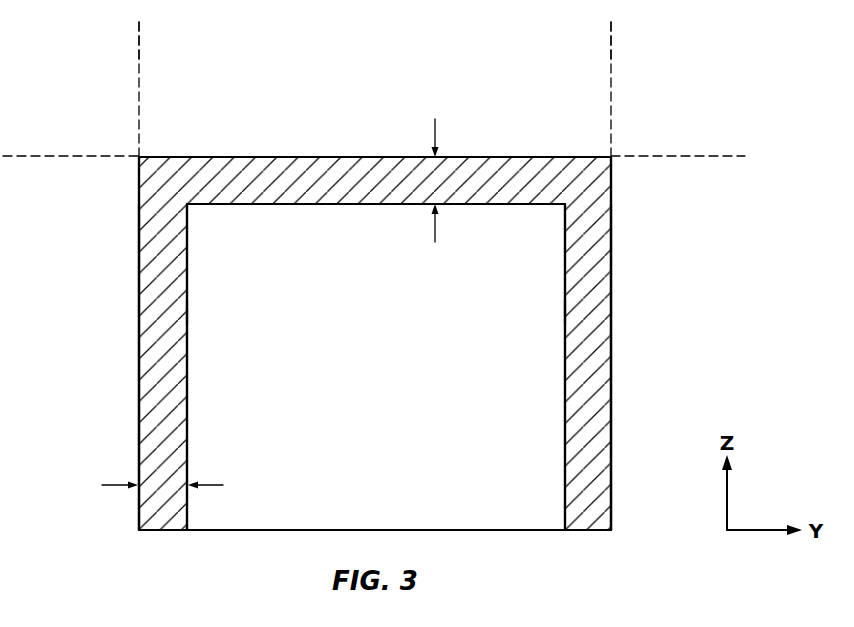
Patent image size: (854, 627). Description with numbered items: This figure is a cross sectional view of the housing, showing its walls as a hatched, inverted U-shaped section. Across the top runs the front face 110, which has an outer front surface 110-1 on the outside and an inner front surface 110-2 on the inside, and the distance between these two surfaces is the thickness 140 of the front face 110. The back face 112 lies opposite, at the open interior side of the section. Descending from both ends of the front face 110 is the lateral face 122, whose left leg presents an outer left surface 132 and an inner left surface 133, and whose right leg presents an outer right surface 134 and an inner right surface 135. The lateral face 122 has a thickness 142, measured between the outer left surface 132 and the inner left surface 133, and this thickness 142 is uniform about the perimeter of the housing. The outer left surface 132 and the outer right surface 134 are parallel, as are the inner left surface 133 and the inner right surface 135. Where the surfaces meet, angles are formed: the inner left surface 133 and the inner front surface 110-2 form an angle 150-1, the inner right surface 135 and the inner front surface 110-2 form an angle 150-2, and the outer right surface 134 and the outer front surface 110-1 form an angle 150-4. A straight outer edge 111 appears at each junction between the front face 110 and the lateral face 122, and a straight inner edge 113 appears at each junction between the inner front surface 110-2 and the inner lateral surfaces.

The front face 110 is at (356, 146).
The outer front surface 110-1 is at (284, 157).
The inner front surface 110-2 is at (317, 207).
The outer edge 111 is at (139, 157).
The back face 112 is at (390, 238).
The inner edge 113 is at (189, 205).
The lateral face 122 is at (128, 428).
The outer left surface 132 is at (139, 377).
The inner left surface 133 is at (187, 370).
The outer right surface 134 is at (612, 370).
The inner right surface 135 is at (565, 370).
The thickness 140 is at (436, 130).
The thickness 142 is at (102, 485).
The angle 150-1 is at (295, 214).
The angle 150-2 is at (128, 43).
The angle 150-4 is at (622, 43).